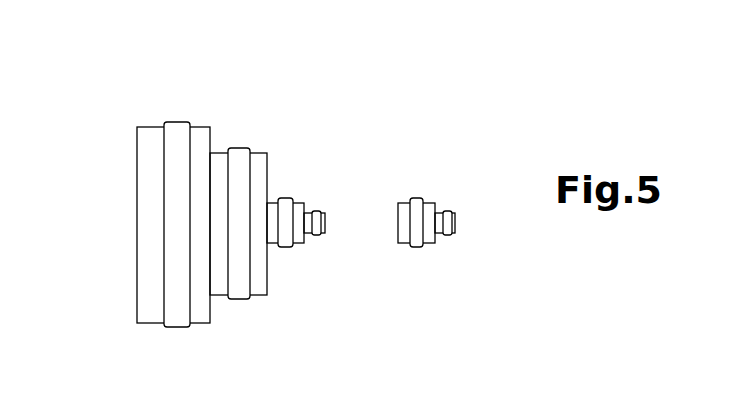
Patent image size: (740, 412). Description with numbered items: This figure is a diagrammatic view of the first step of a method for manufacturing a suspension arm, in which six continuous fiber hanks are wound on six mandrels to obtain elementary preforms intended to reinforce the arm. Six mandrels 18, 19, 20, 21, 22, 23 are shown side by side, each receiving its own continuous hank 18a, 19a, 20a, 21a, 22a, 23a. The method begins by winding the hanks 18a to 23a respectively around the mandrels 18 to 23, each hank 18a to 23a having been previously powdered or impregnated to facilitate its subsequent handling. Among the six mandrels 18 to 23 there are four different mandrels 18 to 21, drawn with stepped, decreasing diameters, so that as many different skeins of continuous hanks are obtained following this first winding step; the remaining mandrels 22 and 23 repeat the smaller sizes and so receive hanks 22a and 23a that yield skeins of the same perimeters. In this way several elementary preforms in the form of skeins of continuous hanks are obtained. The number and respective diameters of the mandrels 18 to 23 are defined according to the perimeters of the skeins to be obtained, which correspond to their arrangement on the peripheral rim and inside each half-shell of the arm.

The mandrel 18 is at (153, 118).
The hank 18a is at (177, 323).
The mandrel 19 is at (222, 142).
The hank 19a is at (235, 299).
The mandrel 20 is at (275, 190).
The hank 20a is at (283, 247).
The mandrel 21 is at (325, 196).
The hank 21a is at (316, 235).
The mandrel 22 is at (403, 191).
The hank 22a is at (413, 247).
The mandrel 23 is at (455, 201).
The hank 23a is at (447, 235).